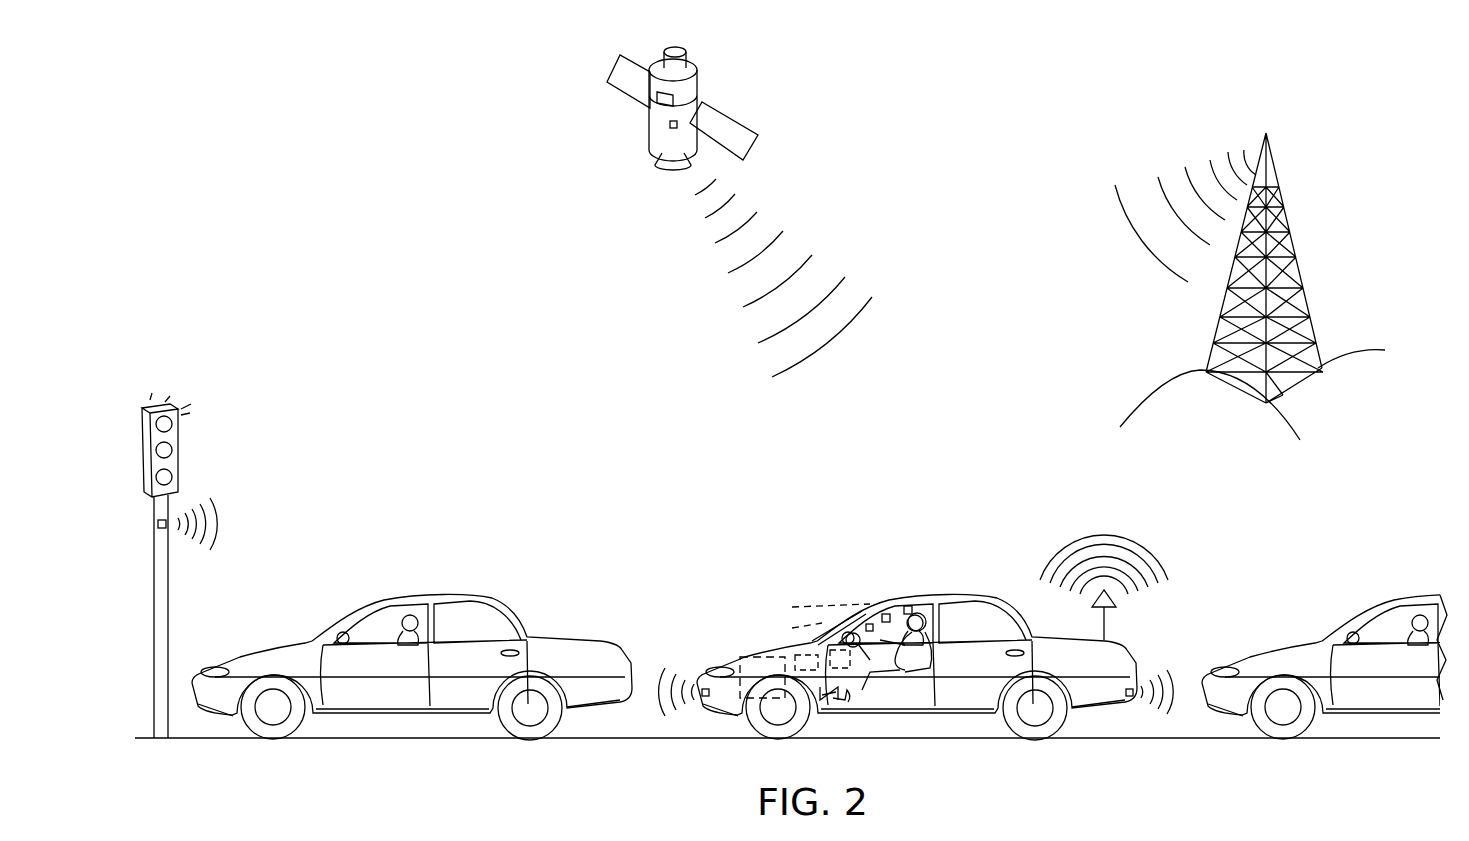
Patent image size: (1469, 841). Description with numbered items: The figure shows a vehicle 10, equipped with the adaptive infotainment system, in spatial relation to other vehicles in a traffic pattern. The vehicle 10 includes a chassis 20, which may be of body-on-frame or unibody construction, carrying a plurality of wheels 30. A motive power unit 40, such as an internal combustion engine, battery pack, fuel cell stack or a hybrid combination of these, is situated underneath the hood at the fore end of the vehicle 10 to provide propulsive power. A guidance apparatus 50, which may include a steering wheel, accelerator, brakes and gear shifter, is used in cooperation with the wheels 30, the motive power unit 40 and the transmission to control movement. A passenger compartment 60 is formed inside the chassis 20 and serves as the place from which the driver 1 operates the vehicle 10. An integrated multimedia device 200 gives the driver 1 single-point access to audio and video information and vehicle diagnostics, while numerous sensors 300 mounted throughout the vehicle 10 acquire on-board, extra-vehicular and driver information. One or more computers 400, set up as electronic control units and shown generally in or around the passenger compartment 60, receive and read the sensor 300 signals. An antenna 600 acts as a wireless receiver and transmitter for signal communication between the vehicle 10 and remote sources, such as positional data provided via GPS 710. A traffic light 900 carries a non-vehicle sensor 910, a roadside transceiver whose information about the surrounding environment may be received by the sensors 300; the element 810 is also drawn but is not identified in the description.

The vehicle 10 is at (751, 568).
The driver 1 is at (918, 659).
The chassis 20 is at (966, 713).
The wheels 30 is at (1037, 726).
The motive power unit 40 is at (766, 657).
The guidance apparatus 50 is at (838, 703).
The passenger compartment 60 is at (916, 638).
The integrated multimedia device 200 is at (850, 698).
The sensors 300 is at (886, 614).
The computer 400 is at (807, 655).
The antenna 600 is at (1116, 604).
The GPS 710 is at (724, 114).
The base station 810 is at (1272, 163).
The traffic light 900 is at (178, 458).
The sensor 910 is at (166, 527).